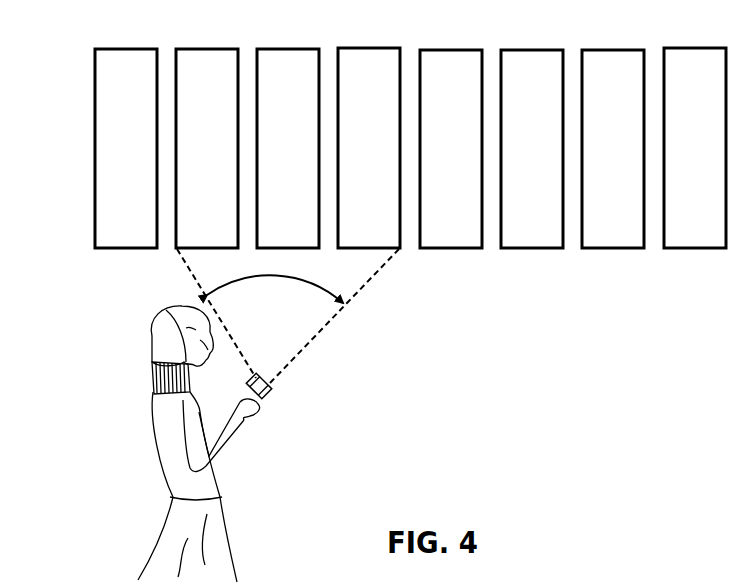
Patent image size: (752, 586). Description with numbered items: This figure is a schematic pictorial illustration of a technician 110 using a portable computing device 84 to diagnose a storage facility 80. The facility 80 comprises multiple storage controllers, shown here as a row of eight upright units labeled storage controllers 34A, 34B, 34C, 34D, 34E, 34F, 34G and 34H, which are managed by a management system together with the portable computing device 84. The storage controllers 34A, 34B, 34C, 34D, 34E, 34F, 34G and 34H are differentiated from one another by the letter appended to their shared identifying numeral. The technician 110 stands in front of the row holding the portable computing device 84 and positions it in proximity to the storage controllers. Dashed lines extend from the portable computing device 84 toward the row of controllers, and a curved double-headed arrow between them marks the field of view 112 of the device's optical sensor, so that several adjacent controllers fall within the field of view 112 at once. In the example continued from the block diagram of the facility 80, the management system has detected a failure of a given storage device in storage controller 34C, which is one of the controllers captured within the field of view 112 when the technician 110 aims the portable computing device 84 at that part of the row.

The facility 80 is at (61, 69).
The storage controller 34A is at (108, 161).
The storage controller 34B is at (189, 161).
The storage controller 34C is at (270, 161).
The storage controller 34D is at (351, 160).
The storage controller 34E is at (433, 161).
The storage controller 34F is at (514, 161).
The storage controller 34G is at (595, 161).
The storage controller 34H is at (677, 158).
The field of view 112 is at (310, 283).
The portable computing device 84 is at (268, 378).
The technician 110 is at (216, 480).